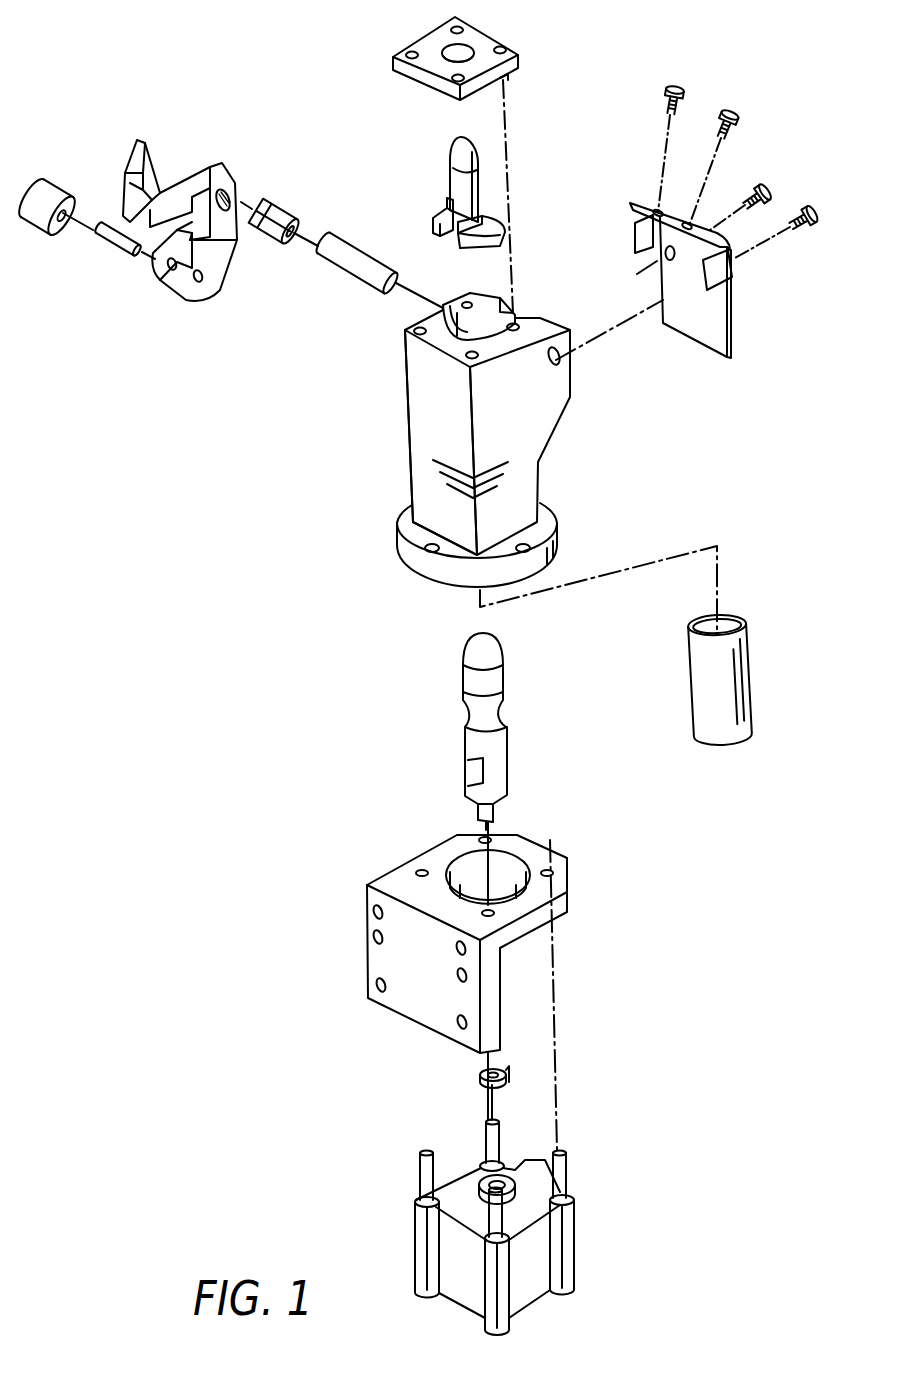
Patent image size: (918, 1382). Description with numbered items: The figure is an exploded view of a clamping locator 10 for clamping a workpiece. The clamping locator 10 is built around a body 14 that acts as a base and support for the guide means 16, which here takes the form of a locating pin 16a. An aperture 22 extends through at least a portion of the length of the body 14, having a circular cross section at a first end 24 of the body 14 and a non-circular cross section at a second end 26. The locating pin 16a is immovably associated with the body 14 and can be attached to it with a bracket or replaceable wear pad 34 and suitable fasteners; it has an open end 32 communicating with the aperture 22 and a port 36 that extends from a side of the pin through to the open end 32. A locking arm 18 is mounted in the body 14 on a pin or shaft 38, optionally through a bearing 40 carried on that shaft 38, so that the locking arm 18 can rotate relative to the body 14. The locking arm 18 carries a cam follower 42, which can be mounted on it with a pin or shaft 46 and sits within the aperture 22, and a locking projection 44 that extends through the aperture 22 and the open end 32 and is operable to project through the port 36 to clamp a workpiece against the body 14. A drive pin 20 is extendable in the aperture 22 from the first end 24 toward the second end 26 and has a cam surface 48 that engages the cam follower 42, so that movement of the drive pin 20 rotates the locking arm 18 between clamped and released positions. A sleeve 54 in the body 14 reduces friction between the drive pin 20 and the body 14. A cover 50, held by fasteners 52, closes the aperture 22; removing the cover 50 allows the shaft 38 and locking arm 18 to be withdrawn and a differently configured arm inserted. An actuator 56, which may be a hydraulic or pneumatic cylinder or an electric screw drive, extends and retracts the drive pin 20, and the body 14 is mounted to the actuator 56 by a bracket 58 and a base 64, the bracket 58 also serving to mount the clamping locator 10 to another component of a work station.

The clamping locator 10 is at (148, 110).
The body 14 is at (472, 432).
The guide means 16 is at (520, 169).
The locating pin 16a is at (474, 163).
The locking arm 18 is at (172, 184).
The drive pin 20 is at (478, 729).
The aperture 22 is at (443, 305).
The first end 24 is at (479, 557).
The second end 26 is at (428, 360).
The open end 32 is at (455, 243).
The replaceable wear pad 34 is at (487, 43).
The port 36 is at (449, 200).
The pin or shaft 38 is at (335, 259).
The bearing 40 is at (272, 241).
The cam follower 42 is at (46, 184).
The locking projection 44 is at (148, 167).
The pin or shaft 46 is at (109, 241).
The cam surface 48 is at (464, 685).
The cover 50 is at (730, 327).
The fasteners 52 is at (722, 112).
The sleeve 54 is at (706, 707).
The actuator 56 is at (575, 1205).
The bracket 58 is at (383, 953).
The base 64 is at (560, 538).